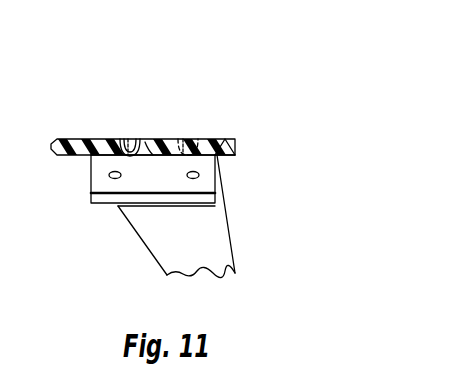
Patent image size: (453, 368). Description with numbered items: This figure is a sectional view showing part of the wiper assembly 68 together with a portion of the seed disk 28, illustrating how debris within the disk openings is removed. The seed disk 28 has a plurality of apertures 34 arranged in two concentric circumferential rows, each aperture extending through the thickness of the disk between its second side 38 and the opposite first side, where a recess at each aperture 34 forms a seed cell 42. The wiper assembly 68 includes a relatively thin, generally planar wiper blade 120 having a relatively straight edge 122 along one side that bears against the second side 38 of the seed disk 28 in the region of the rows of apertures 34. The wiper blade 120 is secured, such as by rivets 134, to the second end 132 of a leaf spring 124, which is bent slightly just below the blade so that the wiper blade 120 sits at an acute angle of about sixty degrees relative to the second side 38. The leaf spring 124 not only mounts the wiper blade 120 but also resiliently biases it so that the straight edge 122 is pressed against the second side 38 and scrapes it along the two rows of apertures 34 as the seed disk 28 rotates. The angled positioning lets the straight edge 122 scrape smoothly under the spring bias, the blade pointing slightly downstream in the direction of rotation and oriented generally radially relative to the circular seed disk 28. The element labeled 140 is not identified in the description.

The seed disk 28 is at (148, 153).
The apertures 34 is at (128, 139).
The second side 38 is at (228, 157).
The seed cell 42 is at (123, 139).
The wiper assembly 68 is at (85, 232).
The wiper blade 120 is at (100, 187).
The straight edge 122 is at (217, 140).
The leaf spring 124 is at (170, 248).
The second end 132 is at (216, 234).
The rivets 134 is at (121, 176).
The fastener head 140 is at (153, 139).